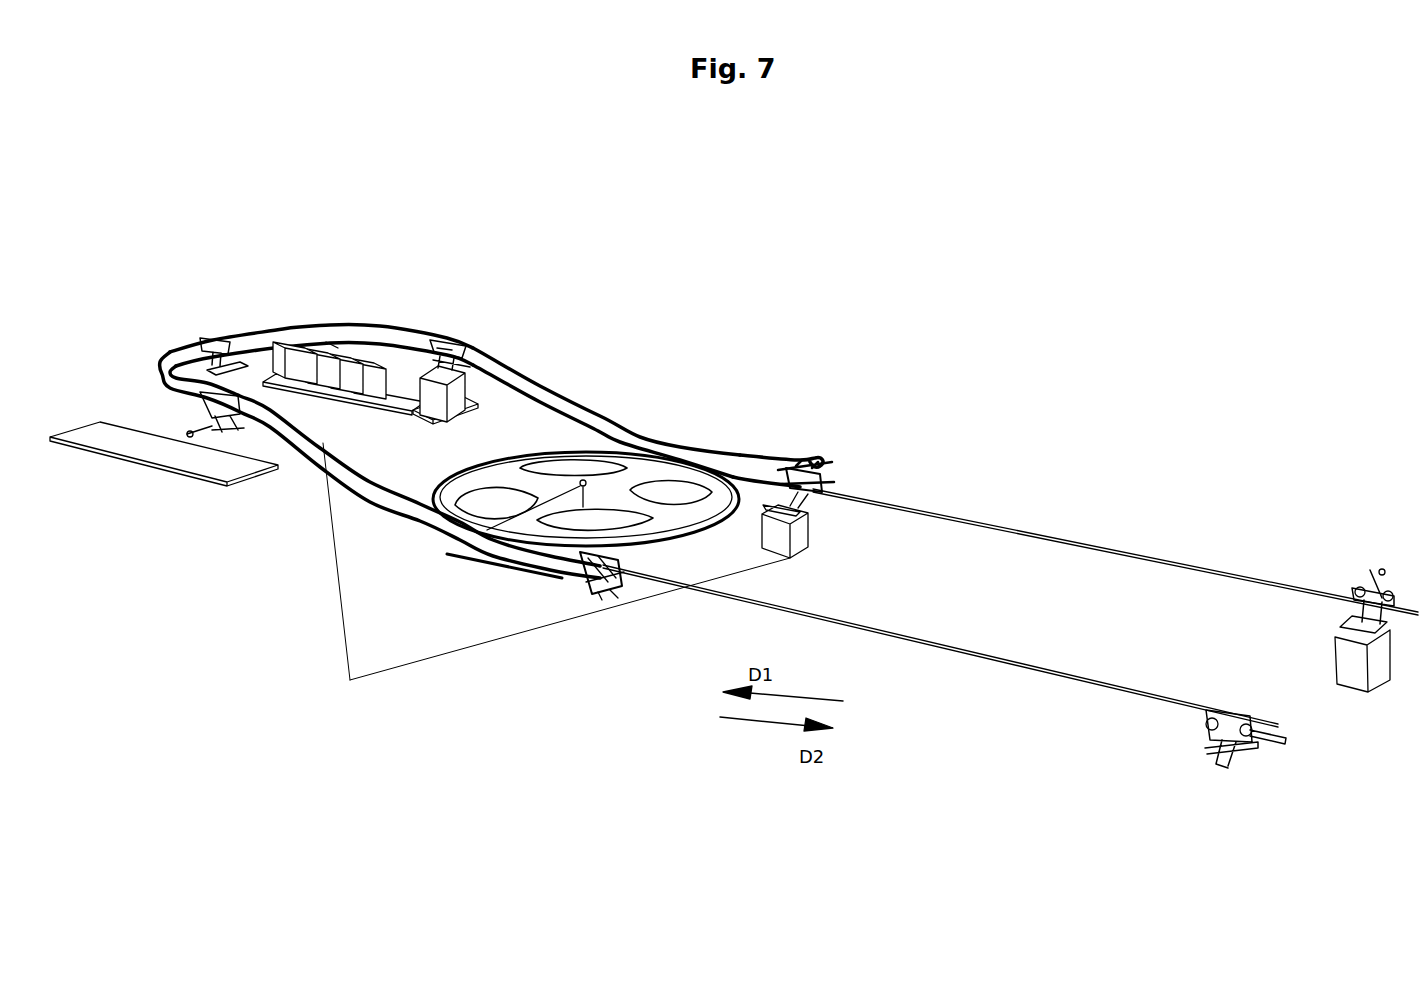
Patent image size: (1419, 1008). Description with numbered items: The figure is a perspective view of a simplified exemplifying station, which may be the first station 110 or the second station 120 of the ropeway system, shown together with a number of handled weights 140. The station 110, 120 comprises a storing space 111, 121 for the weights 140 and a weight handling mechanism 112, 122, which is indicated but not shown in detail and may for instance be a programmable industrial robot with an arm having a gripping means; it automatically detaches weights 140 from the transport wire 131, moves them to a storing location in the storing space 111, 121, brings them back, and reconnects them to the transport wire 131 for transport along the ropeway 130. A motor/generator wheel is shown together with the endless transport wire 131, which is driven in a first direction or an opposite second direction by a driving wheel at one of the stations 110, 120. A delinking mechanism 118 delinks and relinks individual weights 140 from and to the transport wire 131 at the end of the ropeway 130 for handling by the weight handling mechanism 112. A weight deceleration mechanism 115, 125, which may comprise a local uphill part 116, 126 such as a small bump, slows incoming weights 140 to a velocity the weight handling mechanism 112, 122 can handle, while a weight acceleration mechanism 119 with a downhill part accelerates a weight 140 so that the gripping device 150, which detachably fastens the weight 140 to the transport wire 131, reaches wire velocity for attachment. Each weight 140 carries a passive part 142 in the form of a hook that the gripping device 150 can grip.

The first station 110 is at (491, 355).
The second station 120 is at (491, 355).
The storing space 111 is at (344, 418).
The storing space 121 is at (410, 437).
The weight handling mechanism 112 is at (375, 313).
The weight handling mechanism 122 is at (410, 340).
The weight deceleration mechanism 115 is at (607, 348).
The local uphill part 116 is at (607, 348).
The weight deceleration mechanism 125 is at (607, 348).
The local uphill part 126 is at (565, 382).
The delinking mechanism 118 is at (792, 413).
The weight acceleration mechanism 119 is at (338, 480).
The ropeway 130 is at (1010, 533).
The transport wire 131 is at (912, 503).
The weight 140 is at (556, 579).
The passive part 142 is at (330, 342).
The gripping device 150 is at (205, 340).